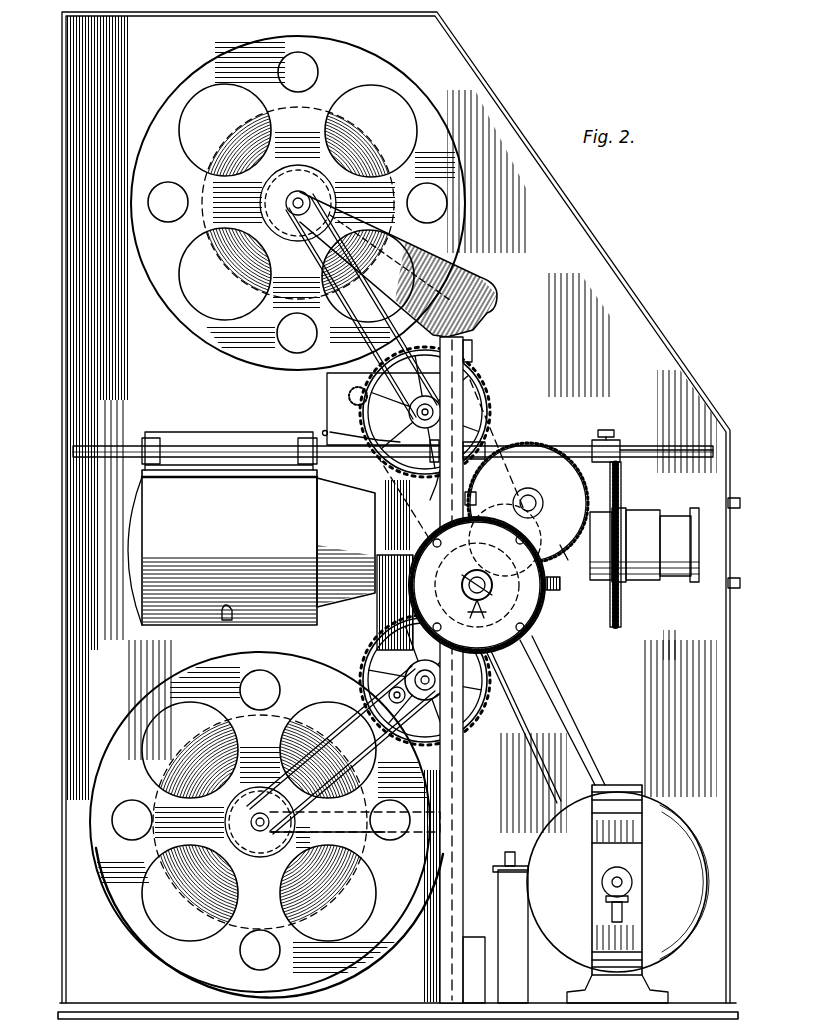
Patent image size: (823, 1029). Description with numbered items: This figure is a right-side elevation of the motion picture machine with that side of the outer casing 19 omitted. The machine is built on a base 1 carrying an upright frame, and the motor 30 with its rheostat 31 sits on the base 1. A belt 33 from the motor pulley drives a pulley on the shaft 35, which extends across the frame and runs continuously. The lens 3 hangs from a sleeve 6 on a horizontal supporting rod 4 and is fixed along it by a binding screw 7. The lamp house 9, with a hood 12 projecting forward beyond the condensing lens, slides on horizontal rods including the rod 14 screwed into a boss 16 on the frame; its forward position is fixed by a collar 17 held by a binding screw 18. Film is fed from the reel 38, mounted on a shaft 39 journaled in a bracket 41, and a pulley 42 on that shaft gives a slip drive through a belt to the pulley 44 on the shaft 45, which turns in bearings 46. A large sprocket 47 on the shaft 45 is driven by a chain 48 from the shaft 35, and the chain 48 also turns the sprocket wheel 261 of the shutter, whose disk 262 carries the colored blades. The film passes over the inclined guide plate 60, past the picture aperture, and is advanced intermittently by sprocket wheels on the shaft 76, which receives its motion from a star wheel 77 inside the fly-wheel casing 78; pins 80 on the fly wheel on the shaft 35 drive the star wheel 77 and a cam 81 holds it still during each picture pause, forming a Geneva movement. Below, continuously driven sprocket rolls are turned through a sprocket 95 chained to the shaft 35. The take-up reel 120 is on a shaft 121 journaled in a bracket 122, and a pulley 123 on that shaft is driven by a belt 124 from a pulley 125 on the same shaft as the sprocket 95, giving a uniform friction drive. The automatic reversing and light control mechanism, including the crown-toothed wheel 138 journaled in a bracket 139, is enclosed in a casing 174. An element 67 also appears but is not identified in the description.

The base 1 is at (162, 1003).
The lens 3 is at (642, 512).
The supporting rod 4 is at (630, 448).
The sleeve 6 is at (603, 544).
The binding screw 7 is at (605, 430).
The lamp house 9 is at (145, 597).
The hood 12 is at (365, 564).
The rod 14 is at (212, 448).
The boss 16 is at (445, 470).
The collar 17 is at (378, 441).
The binding screw 18 is at (324, 431).
The outer casing 19 is at (62, 525).
The motor 30 is at (695, 868).
The rheostat 31 is at (498, 904).
The belt 33 is at (570, 736).
The shaft 35 is at (440, 596).
The reel 38 is at (210, 338).
The shaft 39 is at (266, 238).
The bracket 41 is at (415, 272).
The pulley 42 is at (290, 192).
The pulley 44 is at (408, 416).
The shaft 45 is at (445, 405).
The bearings 46 is at (392, 456).
The sprocket 47 is at (488, 410).
The chain 48 is at (498, 432).
The inclined guide plate 60 is at (349, 397).
The film gate post 67 is at (470, 360).
The shaft 76 is at (486, 612).
The star wheel 77 is at (524, 727).
The fly wheel casing 78 is at (538, 624).
The pins 80 is at (494, 588).
The cam 81 is at (462, 610).
The sprocket 95 is at (368, 662).
The reel 120 is at (152, 935).
The shaft 121 is at (259, 834).
The bracket 122 is at (410, 852).
The pulley 123 is at (226, 824).
The belt 124 is at (356, 700).
The pulley 125 is at (425, 680).
The wheel 138 is at (579, 559).
The bracket 139 is at (487, 474).
The casing 174 is at (327, 389).
The sprocket wheel 261 is at (572, 583).
The disk 262 is at (542, 522).